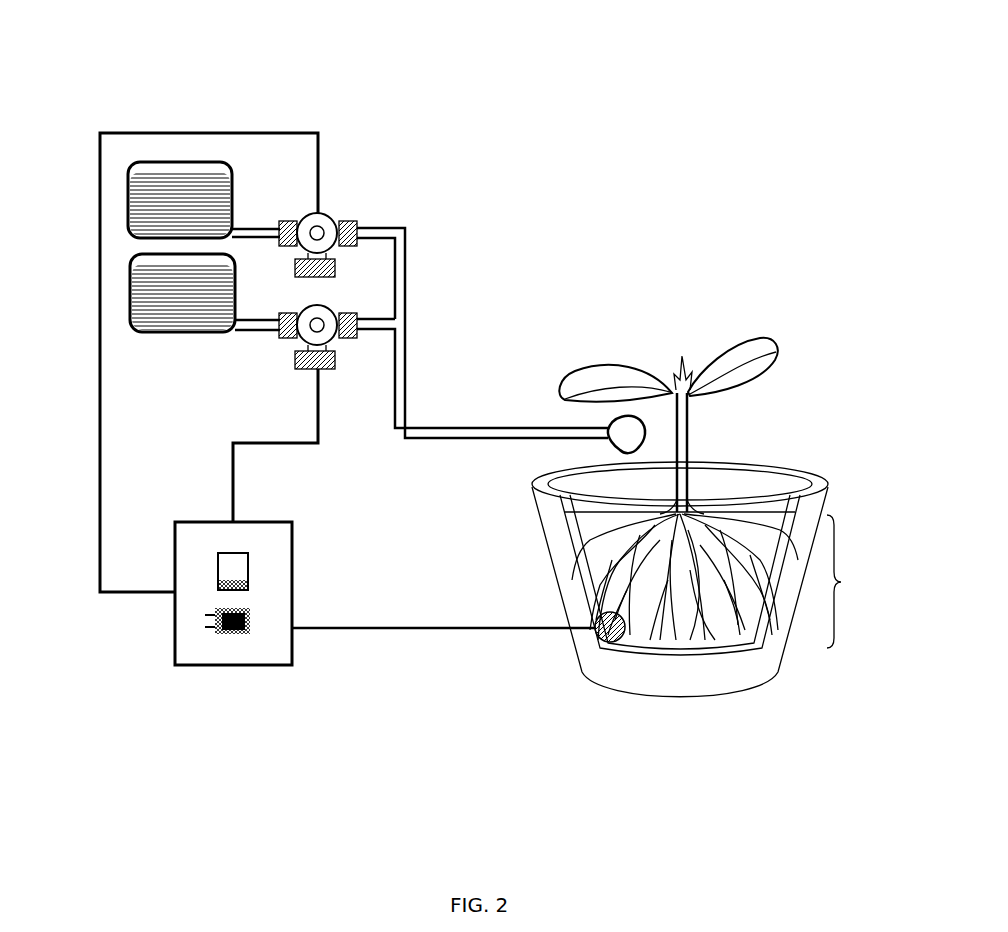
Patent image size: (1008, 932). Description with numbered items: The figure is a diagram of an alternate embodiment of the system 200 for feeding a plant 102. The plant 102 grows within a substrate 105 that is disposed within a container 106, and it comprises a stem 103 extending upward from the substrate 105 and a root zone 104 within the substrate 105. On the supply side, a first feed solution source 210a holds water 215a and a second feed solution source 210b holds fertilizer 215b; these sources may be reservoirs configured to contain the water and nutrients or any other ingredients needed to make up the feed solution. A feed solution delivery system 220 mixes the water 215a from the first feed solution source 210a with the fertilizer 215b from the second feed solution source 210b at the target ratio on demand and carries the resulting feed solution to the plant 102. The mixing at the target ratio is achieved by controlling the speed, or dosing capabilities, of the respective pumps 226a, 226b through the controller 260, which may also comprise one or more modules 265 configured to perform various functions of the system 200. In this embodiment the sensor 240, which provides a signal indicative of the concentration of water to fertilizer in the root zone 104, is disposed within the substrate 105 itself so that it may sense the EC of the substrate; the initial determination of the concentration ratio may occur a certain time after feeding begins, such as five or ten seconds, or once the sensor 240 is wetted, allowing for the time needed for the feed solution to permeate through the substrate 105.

The system 200 is at (222, 104).
The first feed solution source 210a is at (232, 177).
The second feed solution source 210b is at (176, 335).
The water 215a is at (152, 219).
The fertilizer 215b is at (152, 297).
The pump 226a is at (330, 215).
The pump 226b is at (302, 356).
The feed solution delivery system 220 is at (440, 327).
The controller 260 is at (175, 645).
The modules 265 is at (255, 622).
The sensor 240 is at (600, 638).
The plant 102 is at (768, 316).
The stem 103 is at (690, 410).
The root zone 104 is at (732, 581).
The substrate 105 is at (763, 497).
The container 106 is at (725, 685).